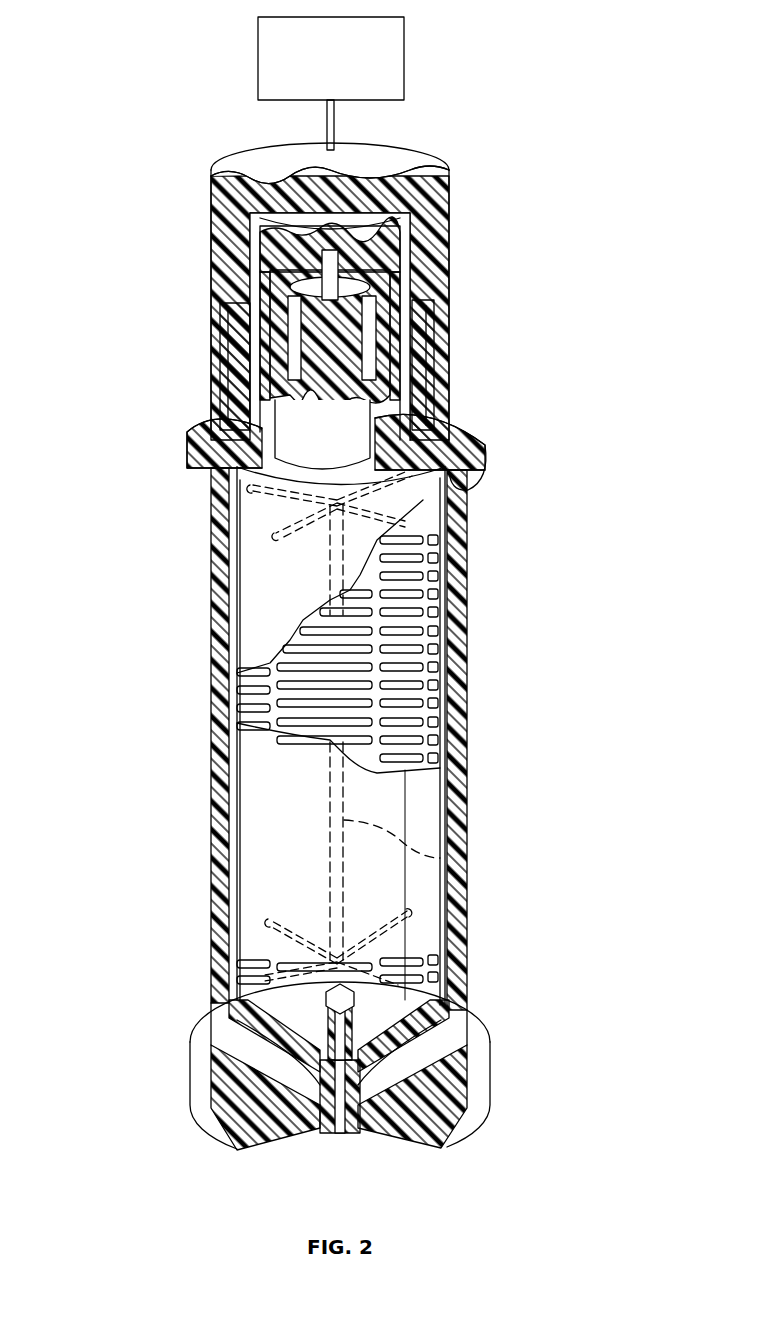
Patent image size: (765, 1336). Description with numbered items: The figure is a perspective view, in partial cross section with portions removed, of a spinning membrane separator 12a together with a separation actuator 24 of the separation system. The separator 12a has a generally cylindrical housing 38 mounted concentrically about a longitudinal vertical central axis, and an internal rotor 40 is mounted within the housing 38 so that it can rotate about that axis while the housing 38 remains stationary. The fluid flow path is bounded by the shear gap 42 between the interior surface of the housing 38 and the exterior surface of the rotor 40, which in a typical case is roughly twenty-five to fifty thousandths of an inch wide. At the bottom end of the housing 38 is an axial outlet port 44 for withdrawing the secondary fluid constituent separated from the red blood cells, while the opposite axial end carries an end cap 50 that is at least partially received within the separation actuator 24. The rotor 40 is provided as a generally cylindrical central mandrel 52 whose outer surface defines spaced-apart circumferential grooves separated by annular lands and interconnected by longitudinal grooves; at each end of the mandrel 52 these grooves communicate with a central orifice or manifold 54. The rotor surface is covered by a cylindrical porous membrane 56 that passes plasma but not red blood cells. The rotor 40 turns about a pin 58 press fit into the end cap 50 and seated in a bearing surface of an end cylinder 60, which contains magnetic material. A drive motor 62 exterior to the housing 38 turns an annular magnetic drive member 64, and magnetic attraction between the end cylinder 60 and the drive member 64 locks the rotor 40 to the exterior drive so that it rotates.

The spinning membrane separator 12a is at (122, 1142).
The separation actuator 24 is at (205, 214).
The housing 38 is at (211, 574).
The rotor 40 is at (408, 801).
The shear gap 42 is at (236, 781).
The axial outlet port 44 is at (328, 1135).
The end cap 50 is at (458, 445).
The central mandrel 52 is at (443, 645).
The central orifice or manifold 54 is at (442, 859).
The cylindrical porous membrane 56 is at (410, 873).
The pin 58 is at (398, 247).
The end cylinder 60 is at (378, 303).
The drive motor 62 is at (317, 69).
The annular magnetic drive member 64 is at (228, 342).